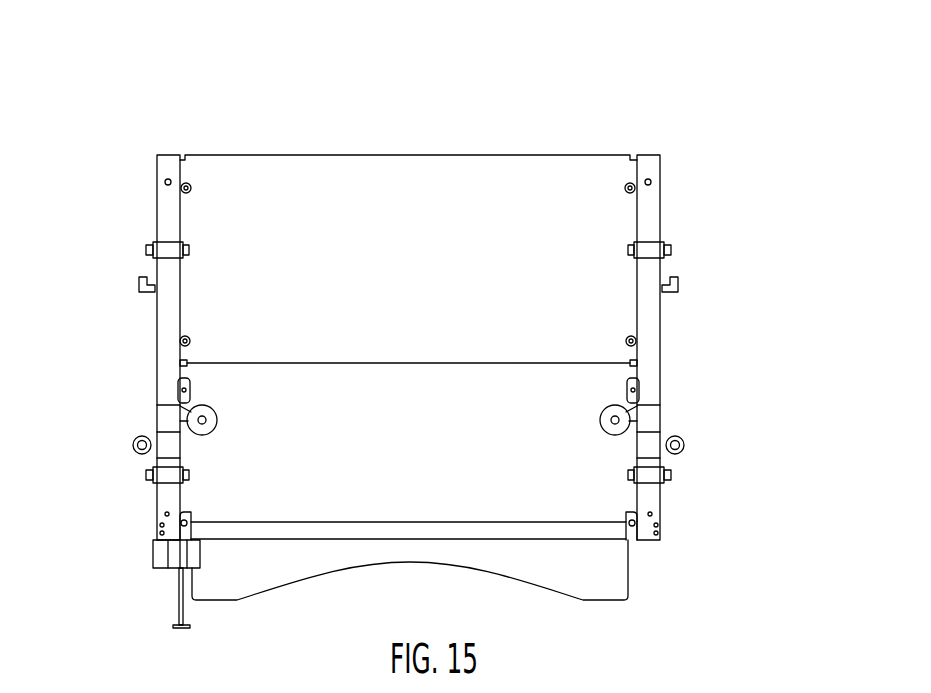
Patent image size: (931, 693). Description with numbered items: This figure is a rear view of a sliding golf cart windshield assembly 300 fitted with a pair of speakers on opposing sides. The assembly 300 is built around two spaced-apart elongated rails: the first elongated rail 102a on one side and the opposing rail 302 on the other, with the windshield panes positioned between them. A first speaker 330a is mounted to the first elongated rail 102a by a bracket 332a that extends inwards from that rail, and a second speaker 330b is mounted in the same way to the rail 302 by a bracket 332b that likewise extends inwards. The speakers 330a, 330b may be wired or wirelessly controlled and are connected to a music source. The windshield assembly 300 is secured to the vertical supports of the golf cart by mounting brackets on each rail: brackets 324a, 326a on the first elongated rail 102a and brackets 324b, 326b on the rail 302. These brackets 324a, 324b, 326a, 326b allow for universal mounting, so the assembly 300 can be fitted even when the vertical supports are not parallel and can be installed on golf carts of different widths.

The sliding golf cart windshield assembly 300 is at (697, 77).
The rail 302 is at (660, 312).
The first elongated rail 102a is at (155, 308).
The bracket 324a is at (153, 241).
The bracket 324b is at (668, 250).
The bracket 326a is at (152, 488).
The bracket 326b is at (656, 470).
The speaker 330a is at (167, 415).
The speaker 330b is at (643, 400).
The bracket 332a is at (158, 416).
The bracket 332b is at (647, 417).